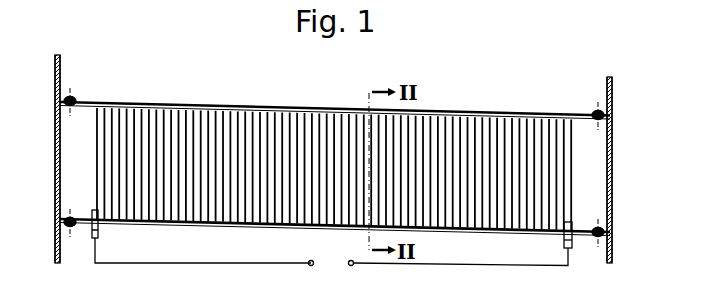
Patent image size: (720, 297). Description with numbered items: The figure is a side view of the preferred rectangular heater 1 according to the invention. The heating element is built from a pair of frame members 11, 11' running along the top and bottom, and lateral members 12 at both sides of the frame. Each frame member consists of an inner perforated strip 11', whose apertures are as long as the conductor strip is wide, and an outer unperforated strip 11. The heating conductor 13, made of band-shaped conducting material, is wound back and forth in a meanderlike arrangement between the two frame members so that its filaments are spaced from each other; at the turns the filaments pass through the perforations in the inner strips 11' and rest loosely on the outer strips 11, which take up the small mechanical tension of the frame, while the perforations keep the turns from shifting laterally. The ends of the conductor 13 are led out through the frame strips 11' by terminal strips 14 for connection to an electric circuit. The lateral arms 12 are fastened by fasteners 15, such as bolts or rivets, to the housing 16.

The rectangular heater 1 is at (335, 161).
The outer unperforated frame strip 11 is at (335, 170).
The inner perforated frame strip 11' is at (335, 168).
The lateral member 12 is at (56, 157).
The conductor 13 is at (288, 127).
The terminal strip 14 is at (93, 230).
The clamping bolt 15 is at (68, 126).
The housing 16 is at (56, 72).